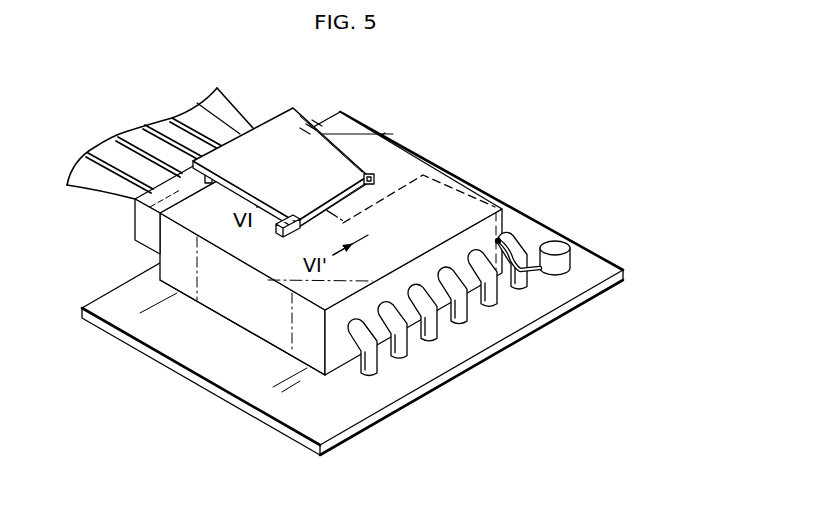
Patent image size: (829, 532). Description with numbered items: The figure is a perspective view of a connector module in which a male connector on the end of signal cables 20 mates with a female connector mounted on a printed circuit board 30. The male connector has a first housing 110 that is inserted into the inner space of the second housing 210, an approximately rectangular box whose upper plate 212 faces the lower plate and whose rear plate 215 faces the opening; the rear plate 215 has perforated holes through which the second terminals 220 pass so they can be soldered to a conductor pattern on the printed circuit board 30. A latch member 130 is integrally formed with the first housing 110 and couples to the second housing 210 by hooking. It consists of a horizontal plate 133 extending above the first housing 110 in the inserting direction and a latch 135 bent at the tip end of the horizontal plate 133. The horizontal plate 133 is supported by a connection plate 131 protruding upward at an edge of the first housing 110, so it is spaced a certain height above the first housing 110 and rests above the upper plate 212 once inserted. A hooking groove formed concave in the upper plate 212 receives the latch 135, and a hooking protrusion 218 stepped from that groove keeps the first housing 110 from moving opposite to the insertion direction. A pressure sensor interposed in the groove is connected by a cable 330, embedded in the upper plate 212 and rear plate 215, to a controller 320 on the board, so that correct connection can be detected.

The signal cables 20 is at (108, 186).
The printed circuit board 30 is at (605, 268).
The first housing 110 is at (313, 117).
The latch member 130 is at (256, 146).
The connection plate 131 is at (196, 163).
The horizontal plate 133 is at (275, 135).
The latch 135 is at (370, 194).
The second housing 210 is at (397, 131).
The upper plate 212 is at (453, 207).
The rear plate 215 is at (340, 348).
The hooking protrusion 218 is at (368, 174).
The second terminals 220 is at (404, 341).
The controller 320 is at (555, 247).
The cable 330 is at (500, 241).